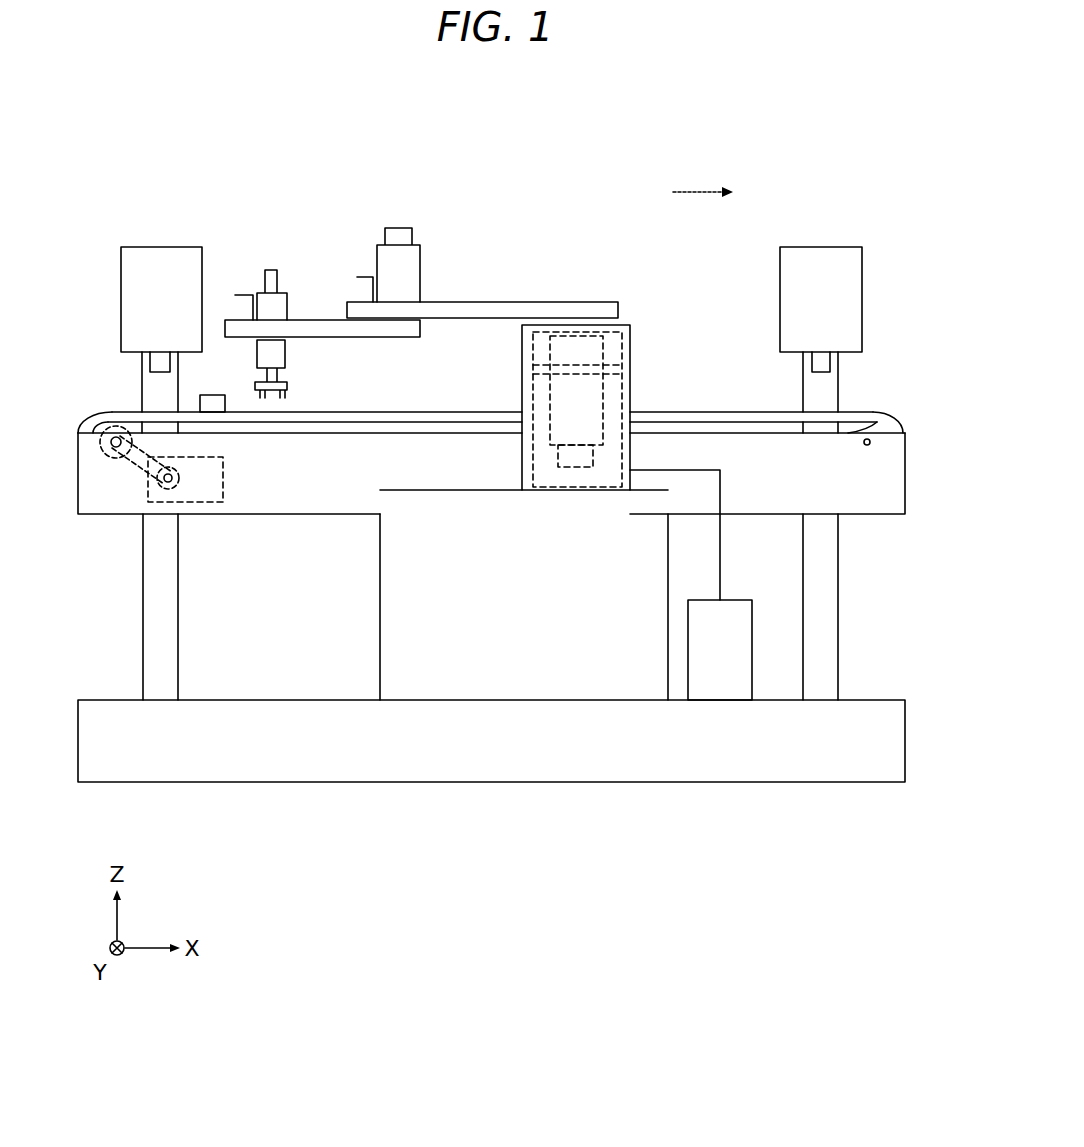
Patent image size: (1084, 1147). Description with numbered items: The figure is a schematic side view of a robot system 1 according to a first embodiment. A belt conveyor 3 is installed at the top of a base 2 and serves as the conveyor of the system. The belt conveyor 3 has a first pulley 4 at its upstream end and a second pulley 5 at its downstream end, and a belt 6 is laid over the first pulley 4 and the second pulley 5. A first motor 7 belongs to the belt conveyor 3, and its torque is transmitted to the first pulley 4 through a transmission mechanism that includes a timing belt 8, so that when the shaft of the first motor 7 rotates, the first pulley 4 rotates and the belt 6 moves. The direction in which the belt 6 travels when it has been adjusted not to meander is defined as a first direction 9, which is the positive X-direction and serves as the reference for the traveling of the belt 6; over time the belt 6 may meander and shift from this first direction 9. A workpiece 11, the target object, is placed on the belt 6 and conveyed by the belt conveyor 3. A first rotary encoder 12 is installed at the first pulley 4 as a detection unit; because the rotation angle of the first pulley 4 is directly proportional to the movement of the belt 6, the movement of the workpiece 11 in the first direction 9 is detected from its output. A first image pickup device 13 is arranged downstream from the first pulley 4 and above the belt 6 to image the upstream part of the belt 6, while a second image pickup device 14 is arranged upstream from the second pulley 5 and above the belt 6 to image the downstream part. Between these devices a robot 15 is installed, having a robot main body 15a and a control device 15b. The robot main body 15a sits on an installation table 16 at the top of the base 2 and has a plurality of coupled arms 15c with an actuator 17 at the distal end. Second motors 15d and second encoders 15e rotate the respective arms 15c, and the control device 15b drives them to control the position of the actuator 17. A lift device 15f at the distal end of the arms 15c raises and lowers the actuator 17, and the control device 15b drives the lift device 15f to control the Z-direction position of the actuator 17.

The robot system 1 is at (862, 146).
The base 2 is at (895, 752).
The belt conveyor 3 is at (898, 487).
The first pulley 4 is at (123, 424).
The second pulley 5 is at (878, 420).
The belt 6 is at (720, 410).
The first motor 7 is at (225, 475).
The timing belt 8 is at (130, 473).
The first direction 9 is at (700, 190).
The workpiece 11 is at (212, 395).
The first rotary encoder 12 is at (108, 425).
The first image pickup device 13 is at (166, 255).
The second image pickup device 14 is at (822, 250).
The robot 15 is at (501, 440).
The robot main body 15a is at (563, 178).
The control device 15b is at (722, 686).
The arms 15c is at (390, 338).
The second motors 15d is at (492, 350).
The second encoders 15e is at (566, 410).
The lift device 15f is at (280, 300).
The installation table 16 is at (378, 622).
The actuator 17 is at (292, 385).